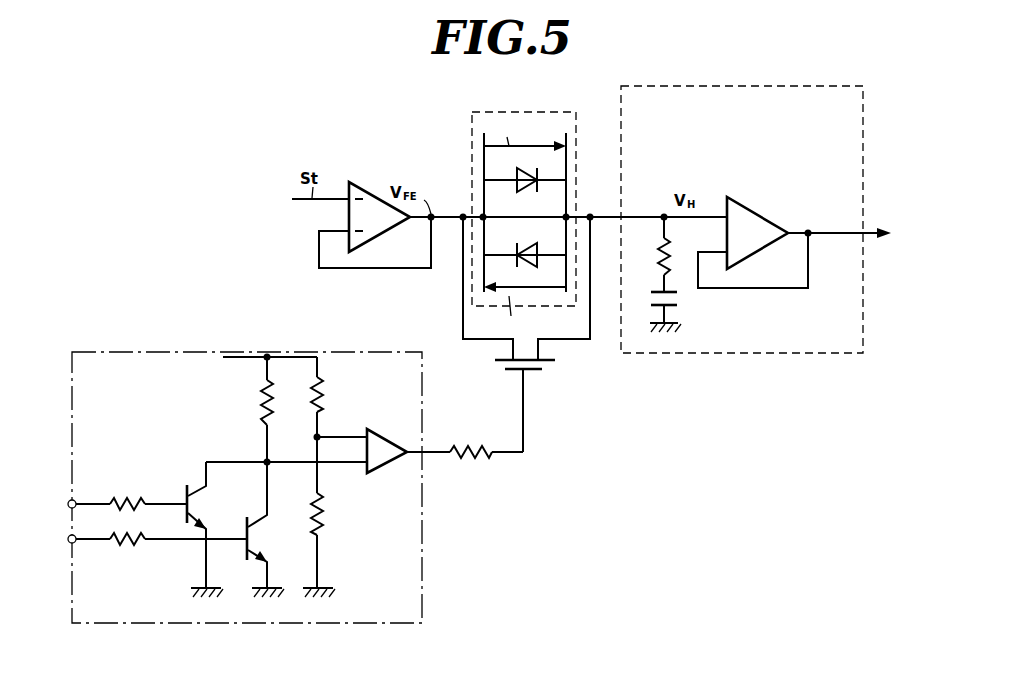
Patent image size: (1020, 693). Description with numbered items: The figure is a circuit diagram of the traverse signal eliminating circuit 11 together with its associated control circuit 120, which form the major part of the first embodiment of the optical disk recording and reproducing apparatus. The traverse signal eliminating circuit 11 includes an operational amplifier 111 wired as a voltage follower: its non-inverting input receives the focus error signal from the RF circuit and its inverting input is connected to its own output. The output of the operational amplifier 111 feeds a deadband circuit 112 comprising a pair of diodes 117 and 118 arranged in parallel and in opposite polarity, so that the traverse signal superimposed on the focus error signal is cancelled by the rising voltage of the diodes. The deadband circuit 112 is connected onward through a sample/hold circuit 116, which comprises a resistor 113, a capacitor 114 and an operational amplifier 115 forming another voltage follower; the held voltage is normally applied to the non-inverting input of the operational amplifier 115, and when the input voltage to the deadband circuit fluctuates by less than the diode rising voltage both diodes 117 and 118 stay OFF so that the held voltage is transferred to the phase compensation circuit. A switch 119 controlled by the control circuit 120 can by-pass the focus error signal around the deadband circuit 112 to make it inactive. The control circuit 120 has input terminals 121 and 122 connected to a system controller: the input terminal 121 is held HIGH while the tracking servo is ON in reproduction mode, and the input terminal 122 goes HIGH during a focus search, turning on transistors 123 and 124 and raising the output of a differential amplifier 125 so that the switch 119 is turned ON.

The traverse signal eliminating circuit 11 is at (630, 492).
The operational amplifier 111 is at (366, 185).
The deadband circuit 112 is at (482, 223).
The resistor 113 is at (655, 264).
The capacitor 114 is at (678, 302).
The operational amplifier 115 is at (761, 212).
The sample/hold circuit 116 is at (863, 283).
The diode 117 is at (533, 187).
The diode 118 is at (521, 250).
The switch 119 is at (547, 406).
The control circuit 120 is at (258, 487).
The input terminal 121 is at (68, 502).
The input terminal 122 is at (68, 543).
The transistor 123 is at (196, 530).
The transistor 124 is at (246, 557).
The differential amplifier 125 is at (380, 468).